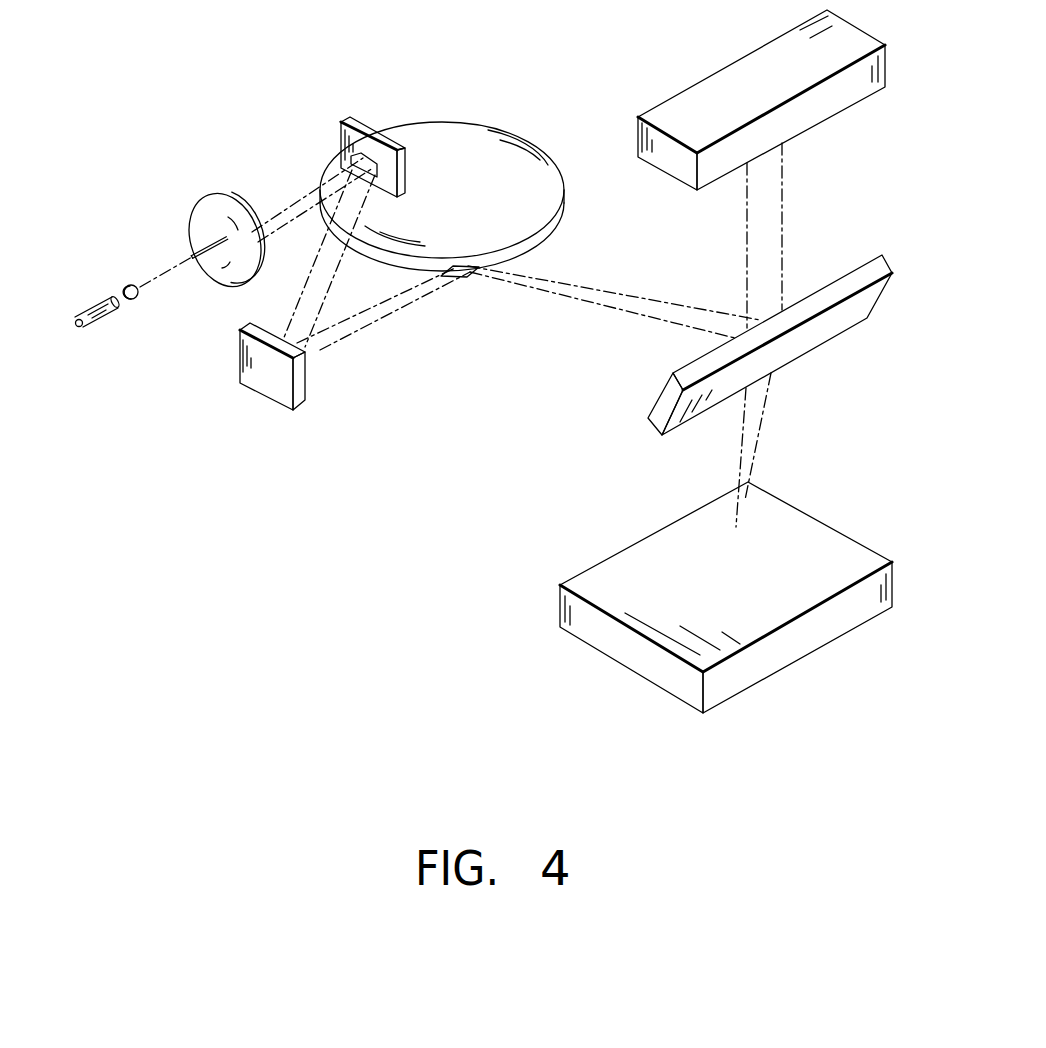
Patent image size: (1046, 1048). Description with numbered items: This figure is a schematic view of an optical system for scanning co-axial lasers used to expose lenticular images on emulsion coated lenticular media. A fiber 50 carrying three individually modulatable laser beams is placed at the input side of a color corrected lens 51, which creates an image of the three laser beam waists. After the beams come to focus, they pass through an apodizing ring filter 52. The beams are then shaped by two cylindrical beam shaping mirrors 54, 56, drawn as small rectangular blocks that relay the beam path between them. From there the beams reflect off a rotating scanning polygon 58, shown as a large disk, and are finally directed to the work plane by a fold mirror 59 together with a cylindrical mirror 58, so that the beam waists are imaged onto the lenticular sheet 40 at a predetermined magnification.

The lenticular sheet 40 is at (607, 570).
The fiber 50 is at (92, 322).
The color corrected lens 51 is at (141, 297).
The apodizing ring filter 52 is at (213, 194).
The cylindrical beam shaping mirror 54 is at (350, 113).
The cylindrical beam shaping mirror 56 is at (282, 393).
The rotating scanning polygon 58 is at (447, 127).
The fold mirror 59 is at (873, 267).